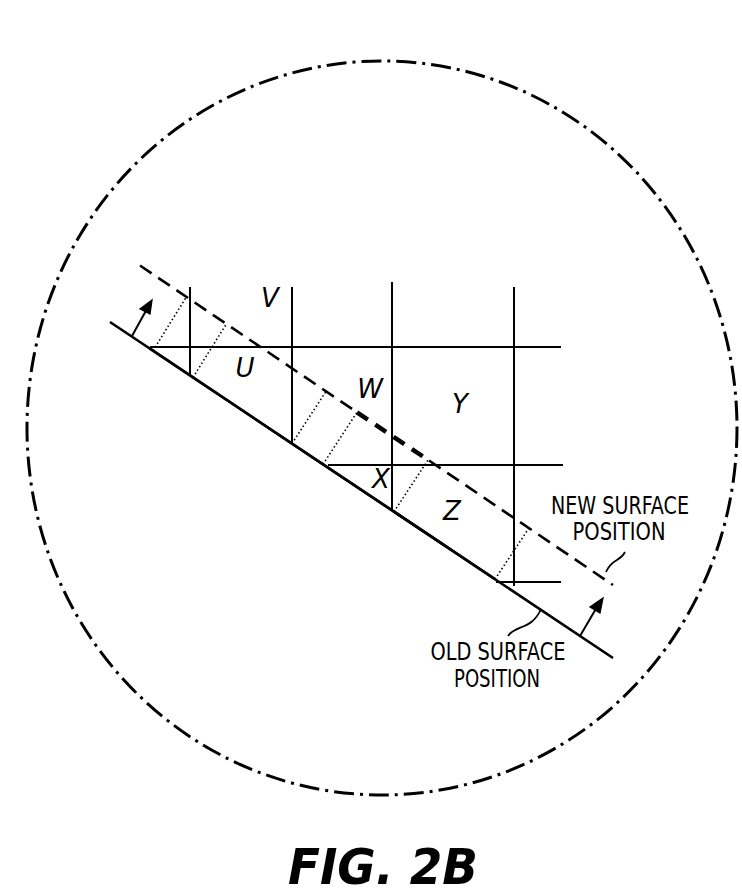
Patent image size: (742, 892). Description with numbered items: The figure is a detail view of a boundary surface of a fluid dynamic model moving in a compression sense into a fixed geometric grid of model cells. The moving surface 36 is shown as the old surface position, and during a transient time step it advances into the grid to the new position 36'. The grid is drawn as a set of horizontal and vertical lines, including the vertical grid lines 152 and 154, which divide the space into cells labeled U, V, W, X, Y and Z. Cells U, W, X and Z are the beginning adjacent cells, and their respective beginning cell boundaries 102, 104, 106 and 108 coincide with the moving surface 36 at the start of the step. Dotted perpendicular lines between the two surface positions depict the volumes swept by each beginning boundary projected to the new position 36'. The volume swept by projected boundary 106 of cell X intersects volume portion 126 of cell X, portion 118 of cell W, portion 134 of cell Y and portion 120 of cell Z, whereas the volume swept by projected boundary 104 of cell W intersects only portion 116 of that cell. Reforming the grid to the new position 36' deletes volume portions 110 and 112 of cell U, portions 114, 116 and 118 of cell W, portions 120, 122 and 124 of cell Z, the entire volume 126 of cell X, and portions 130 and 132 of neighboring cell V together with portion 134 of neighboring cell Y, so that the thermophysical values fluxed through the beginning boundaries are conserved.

The moving surface 36 is at (361, 519).
The new position of moving surface 36' is at (376, 426).
The beginning cell boundary 102 is at (193, 376).
The beginning cell boundary 104 is at (298, 447).
The beginning cell boundary 106 is at (358, 486).
The beginning cell boundary 108 is at (448, 548).
The volume portion 110 is at (191, 362).
The volume portion 112 is at (247, 409).
The volume portion 114 is at (303, 400).
The volume portion 116 is at (315, 430).
The volume portion 118 is at (363, 452).
The volume portion 120 is at (392, 508).
The volume portion 122 is at (422, 526).
The volume portion 124 is at (505, 573).
The volume portion 126 is at (355, 478).
The volume portion 130 is at (200, 332).
The volume portion 132 is at (230, 337).
The volume portion 134 is at (393, 438).
The grid line 152 is at (380, 357).
The grid line 154 is at (483, 363).